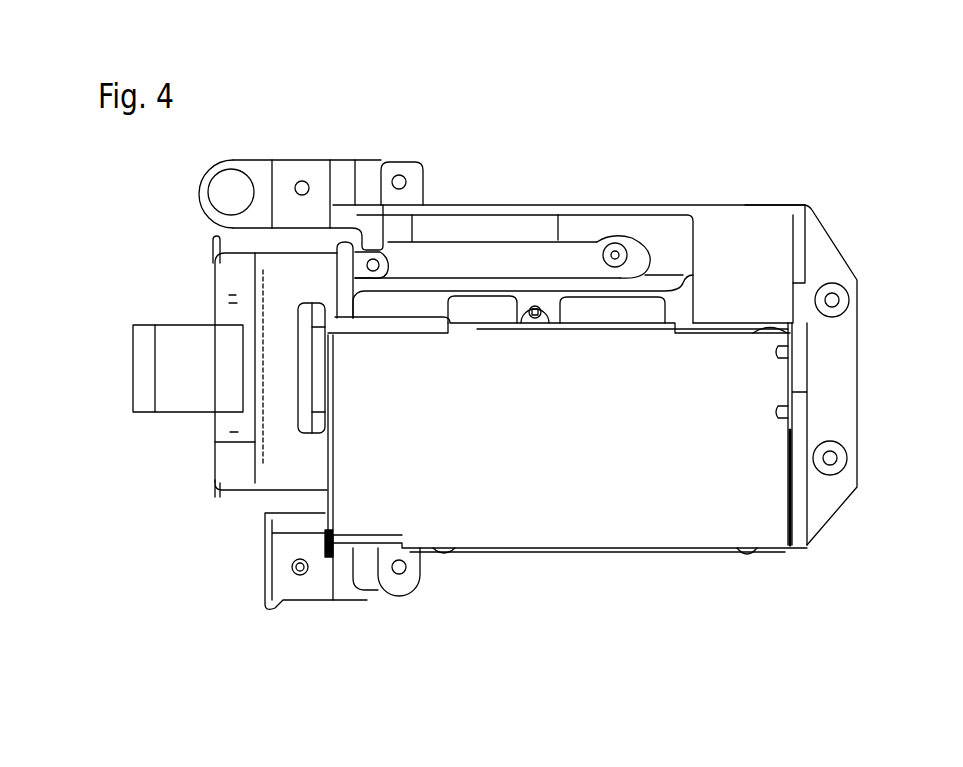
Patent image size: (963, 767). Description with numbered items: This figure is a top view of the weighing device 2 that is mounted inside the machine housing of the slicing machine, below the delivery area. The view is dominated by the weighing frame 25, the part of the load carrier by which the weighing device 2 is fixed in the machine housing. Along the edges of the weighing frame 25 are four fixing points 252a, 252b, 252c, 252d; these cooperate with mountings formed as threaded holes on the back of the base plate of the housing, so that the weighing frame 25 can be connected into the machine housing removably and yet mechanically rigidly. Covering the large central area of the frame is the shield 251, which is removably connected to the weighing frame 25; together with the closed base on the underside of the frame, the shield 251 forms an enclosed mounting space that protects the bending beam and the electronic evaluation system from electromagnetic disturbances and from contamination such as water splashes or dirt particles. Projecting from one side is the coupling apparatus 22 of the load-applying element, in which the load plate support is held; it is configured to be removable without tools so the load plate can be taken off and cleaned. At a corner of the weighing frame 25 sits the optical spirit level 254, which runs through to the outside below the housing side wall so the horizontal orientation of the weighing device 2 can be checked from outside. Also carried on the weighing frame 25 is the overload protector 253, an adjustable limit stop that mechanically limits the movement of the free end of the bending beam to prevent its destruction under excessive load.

The weighing device 2 is at (760, 107).
The coupling apparatus 22 is at (179, 330).
The weighing frame 25 is at (745, 205).
The shield 251 is at (702, 531).
The fixing point 252a is at (405, 178).
The fixing point 252b is at (398, 582).
The fixing point 252c is at (835, 284).
The fixing point 252d is at (828, 476).
The overload protector 253 is at (540, 307).
The spirit level 254 is at (228, 176).